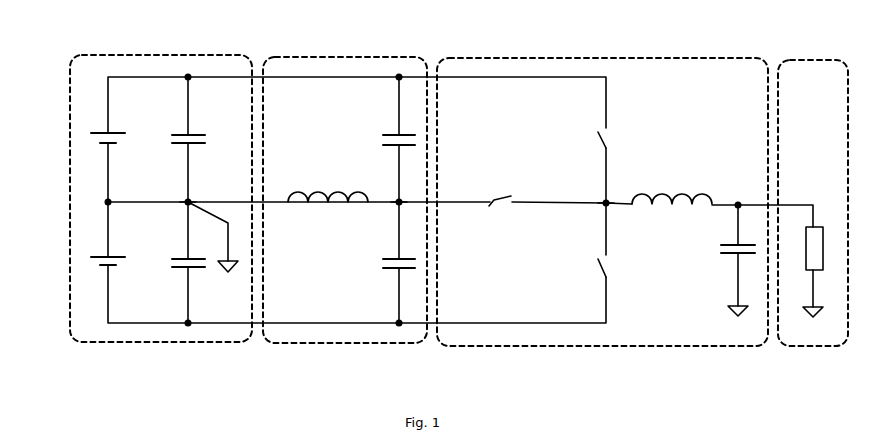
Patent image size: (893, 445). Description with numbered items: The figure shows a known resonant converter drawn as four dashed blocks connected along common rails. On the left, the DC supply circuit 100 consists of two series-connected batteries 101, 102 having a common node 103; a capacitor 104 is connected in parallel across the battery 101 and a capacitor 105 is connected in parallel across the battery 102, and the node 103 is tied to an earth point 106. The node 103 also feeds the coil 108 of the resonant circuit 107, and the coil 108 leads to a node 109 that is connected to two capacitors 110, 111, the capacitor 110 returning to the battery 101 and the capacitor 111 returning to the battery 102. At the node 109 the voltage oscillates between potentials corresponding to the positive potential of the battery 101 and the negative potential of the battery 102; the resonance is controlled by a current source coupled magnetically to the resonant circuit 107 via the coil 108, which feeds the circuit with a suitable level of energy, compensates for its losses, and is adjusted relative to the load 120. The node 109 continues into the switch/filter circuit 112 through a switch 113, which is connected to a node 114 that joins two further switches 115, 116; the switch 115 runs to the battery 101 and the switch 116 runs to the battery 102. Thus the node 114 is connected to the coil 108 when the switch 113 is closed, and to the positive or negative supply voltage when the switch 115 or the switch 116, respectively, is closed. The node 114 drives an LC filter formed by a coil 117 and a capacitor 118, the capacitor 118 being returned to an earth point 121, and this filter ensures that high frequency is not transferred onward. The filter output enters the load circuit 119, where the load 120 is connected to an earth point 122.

The DC supply circuit 100 is at (73, 58).
The battery 101 is at (109, 132).
The battery 102 is at (109, 256).
The common node 103 is at (186, 200).
The capacitor 104 is at (194, 135).
The capacitor 105 is at (183, 270).
The earth point 106 is at (227, 273).
The resonant circuit 107 is at (362, 56).
The coil 108 is at (322, 191).
The node 109 is at (396, 206).
The capacitor 110 is at (386, 134).
The capacitor 111 is at (388, 269).
The switch/filter circuit 112 is at (655, 58).
The switch 113 is at (496, 197).
The node 114 is at (604, 207).
The switch 115 is at (607, 138).
The switch 116 is at (608, 263).
The coil 117 is at (672, 195).
The capacitor 118 is at (727, 253).
The load circuit 119 is at (808, 60).
The load 120 is at (823, 228).
The earth point 121 is at (736, 316).
The earth point 122 is at (815, 318).